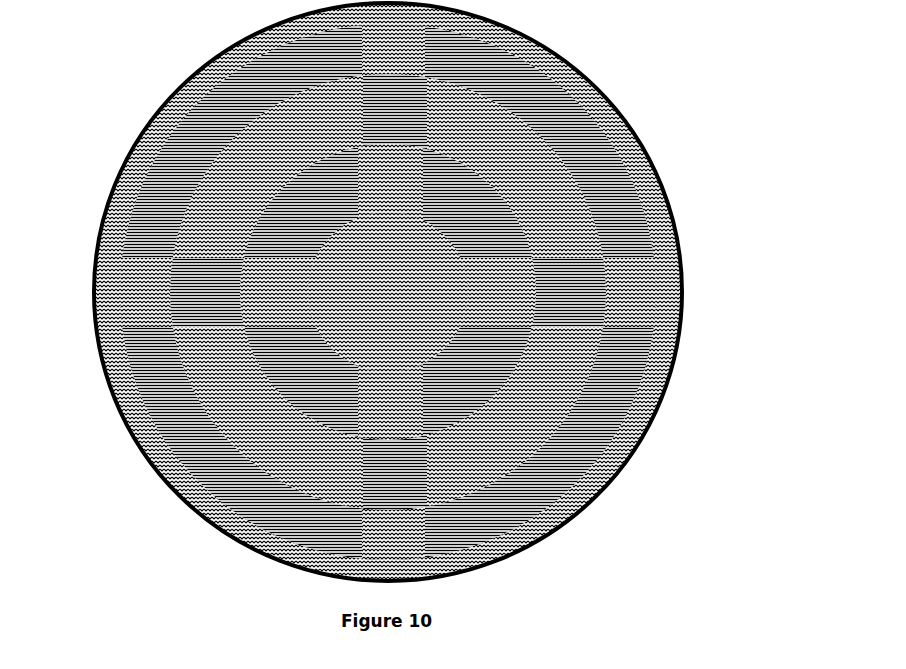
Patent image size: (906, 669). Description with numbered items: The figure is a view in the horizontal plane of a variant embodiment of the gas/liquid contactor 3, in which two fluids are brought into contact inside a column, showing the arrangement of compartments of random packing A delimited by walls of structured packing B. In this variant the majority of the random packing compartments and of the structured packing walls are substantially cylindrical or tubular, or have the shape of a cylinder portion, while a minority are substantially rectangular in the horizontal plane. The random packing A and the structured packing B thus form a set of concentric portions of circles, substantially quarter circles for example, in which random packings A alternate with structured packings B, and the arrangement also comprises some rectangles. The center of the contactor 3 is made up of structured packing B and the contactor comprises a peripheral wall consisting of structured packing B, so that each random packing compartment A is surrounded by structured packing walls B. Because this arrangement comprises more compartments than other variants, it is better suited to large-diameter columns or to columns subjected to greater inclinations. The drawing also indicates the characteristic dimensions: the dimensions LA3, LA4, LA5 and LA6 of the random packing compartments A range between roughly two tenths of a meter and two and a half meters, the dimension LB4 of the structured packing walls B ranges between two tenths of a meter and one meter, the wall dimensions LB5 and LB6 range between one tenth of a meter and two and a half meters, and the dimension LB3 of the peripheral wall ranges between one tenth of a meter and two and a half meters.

The gas/liquid contactor 3 is at (410, 300).
The random packing A is at (205, 130).
The structured packing B is at (360, 300).
The dimension of random packing compartment LA3 is at (299, 327).
The dimension of random packing compartment LA4 is at (183, 200).
The width of first region zone LA5 is at (363, 78).
The dimension of random packing compartment LA6 is at (174, 262).
The dimension of peripheral wall LB3 is at (176, 495).
The dimension of structured packing wall LB4 is at (438, 357).
The dimension of structured packing wall LB5 is at (241, 247).
The dimension of structured packing wall LB6 is at (472, 268).